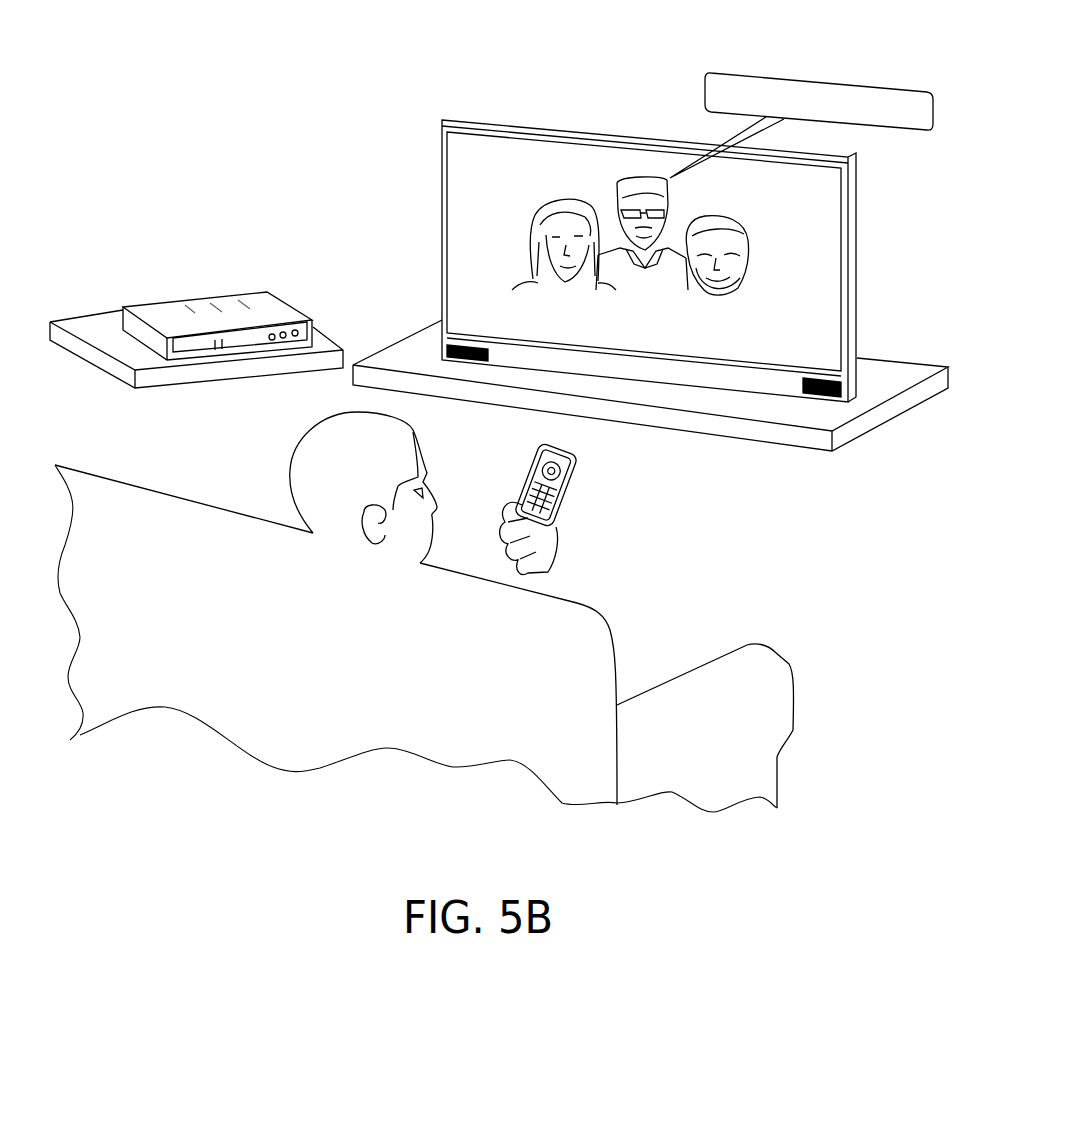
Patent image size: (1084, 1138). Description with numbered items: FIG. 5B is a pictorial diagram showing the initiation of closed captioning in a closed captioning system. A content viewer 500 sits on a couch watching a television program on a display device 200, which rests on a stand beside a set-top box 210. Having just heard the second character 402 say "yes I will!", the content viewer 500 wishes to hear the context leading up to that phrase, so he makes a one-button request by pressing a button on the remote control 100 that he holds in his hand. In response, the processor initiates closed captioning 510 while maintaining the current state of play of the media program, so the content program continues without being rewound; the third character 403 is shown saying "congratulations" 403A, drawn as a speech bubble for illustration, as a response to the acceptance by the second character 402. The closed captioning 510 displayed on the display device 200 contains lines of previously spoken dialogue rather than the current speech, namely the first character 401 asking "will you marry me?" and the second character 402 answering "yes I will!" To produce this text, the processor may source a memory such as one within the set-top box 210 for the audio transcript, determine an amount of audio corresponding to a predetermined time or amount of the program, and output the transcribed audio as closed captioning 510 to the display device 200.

The remote control 100 is at (580, 477).
The display device 200 is at (667, 138).
The set-top box 210 is at (258, 302).
The first character 401 is at (747, 233).
The second character 402 is at (536, 218).
The third character 403 is at (633, 177).
The "congratulations" 403A is at (873, 84).
The content viewer 500 is at (285, 442).
The closed captioning 510 is at (804, 317).